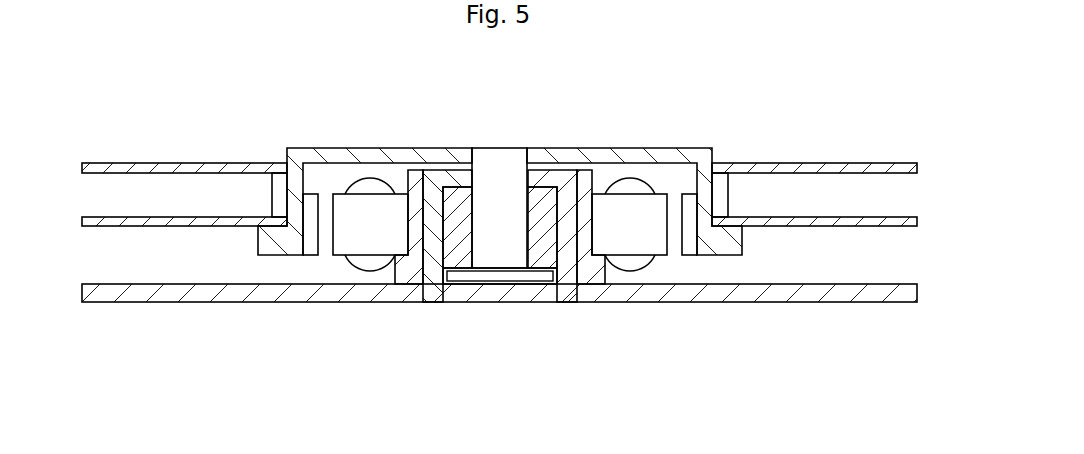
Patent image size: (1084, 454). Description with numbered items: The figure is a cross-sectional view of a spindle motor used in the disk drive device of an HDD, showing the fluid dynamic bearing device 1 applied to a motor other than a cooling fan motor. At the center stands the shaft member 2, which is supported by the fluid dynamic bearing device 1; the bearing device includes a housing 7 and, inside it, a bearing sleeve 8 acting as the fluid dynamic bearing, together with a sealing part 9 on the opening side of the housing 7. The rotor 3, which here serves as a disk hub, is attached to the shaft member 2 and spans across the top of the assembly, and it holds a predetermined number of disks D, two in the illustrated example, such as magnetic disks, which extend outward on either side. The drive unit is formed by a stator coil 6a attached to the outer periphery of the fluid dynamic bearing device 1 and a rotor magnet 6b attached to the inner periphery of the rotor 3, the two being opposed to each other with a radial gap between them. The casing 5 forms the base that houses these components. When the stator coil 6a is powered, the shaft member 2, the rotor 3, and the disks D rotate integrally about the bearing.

The fluid dynamic bearing device 1 is at (560, 166).
The shaft member 2 is at (507, 142).
The rotor 3 is at (665, 156).
The casing 5 is at (588, 287).
The stator coil 6a is at (630, 266).
The rotor magnet 6b is at (691, 258).
The housing 7 is at (432, 232).
The bearing sleeve 8 is at (544, 198).
The sealing part 9 is at (462, 180).
The disk D is at (825, 163).